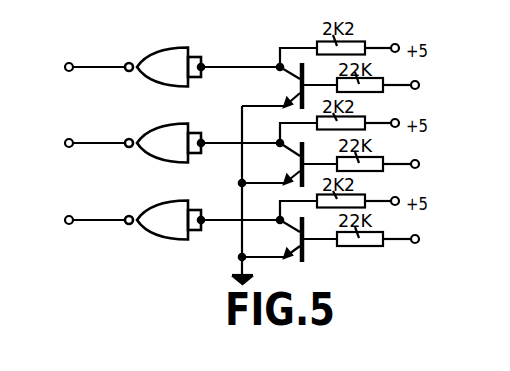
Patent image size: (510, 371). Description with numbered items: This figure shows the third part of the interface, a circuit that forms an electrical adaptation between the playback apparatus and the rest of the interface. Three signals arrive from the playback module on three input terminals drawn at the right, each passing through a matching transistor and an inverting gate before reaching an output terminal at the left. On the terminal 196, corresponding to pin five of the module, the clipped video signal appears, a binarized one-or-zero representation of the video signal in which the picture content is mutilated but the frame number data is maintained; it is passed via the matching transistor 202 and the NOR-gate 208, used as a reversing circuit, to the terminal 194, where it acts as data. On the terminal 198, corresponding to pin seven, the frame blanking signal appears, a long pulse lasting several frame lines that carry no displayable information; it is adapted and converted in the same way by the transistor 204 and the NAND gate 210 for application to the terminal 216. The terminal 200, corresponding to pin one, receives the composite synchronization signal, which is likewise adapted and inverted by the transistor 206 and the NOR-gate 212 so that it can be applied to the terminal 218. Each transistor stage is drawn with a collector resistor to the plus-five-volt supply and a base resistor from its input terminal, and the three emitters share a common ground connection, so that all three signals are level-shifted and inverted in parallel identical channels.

The terminal 194 is at (65, 69).
The terminal 216 is at (67, 139).
The terminal 218 is at (67, 216).
The NOR-gate 208 is at (169, 52).
The NAND gate 210 is at (165, 130).
The NOR-gate 212 is at (165, 208).
The matching transistor 202 is at (298, 86).
The transistor 204 is at (298, 164).
The transistor 206 is at (298, 239).
The terminal 196 is at (416, 88).
The terminal 198 is at (416, 166).
The terminal 200 is at (416, 241).